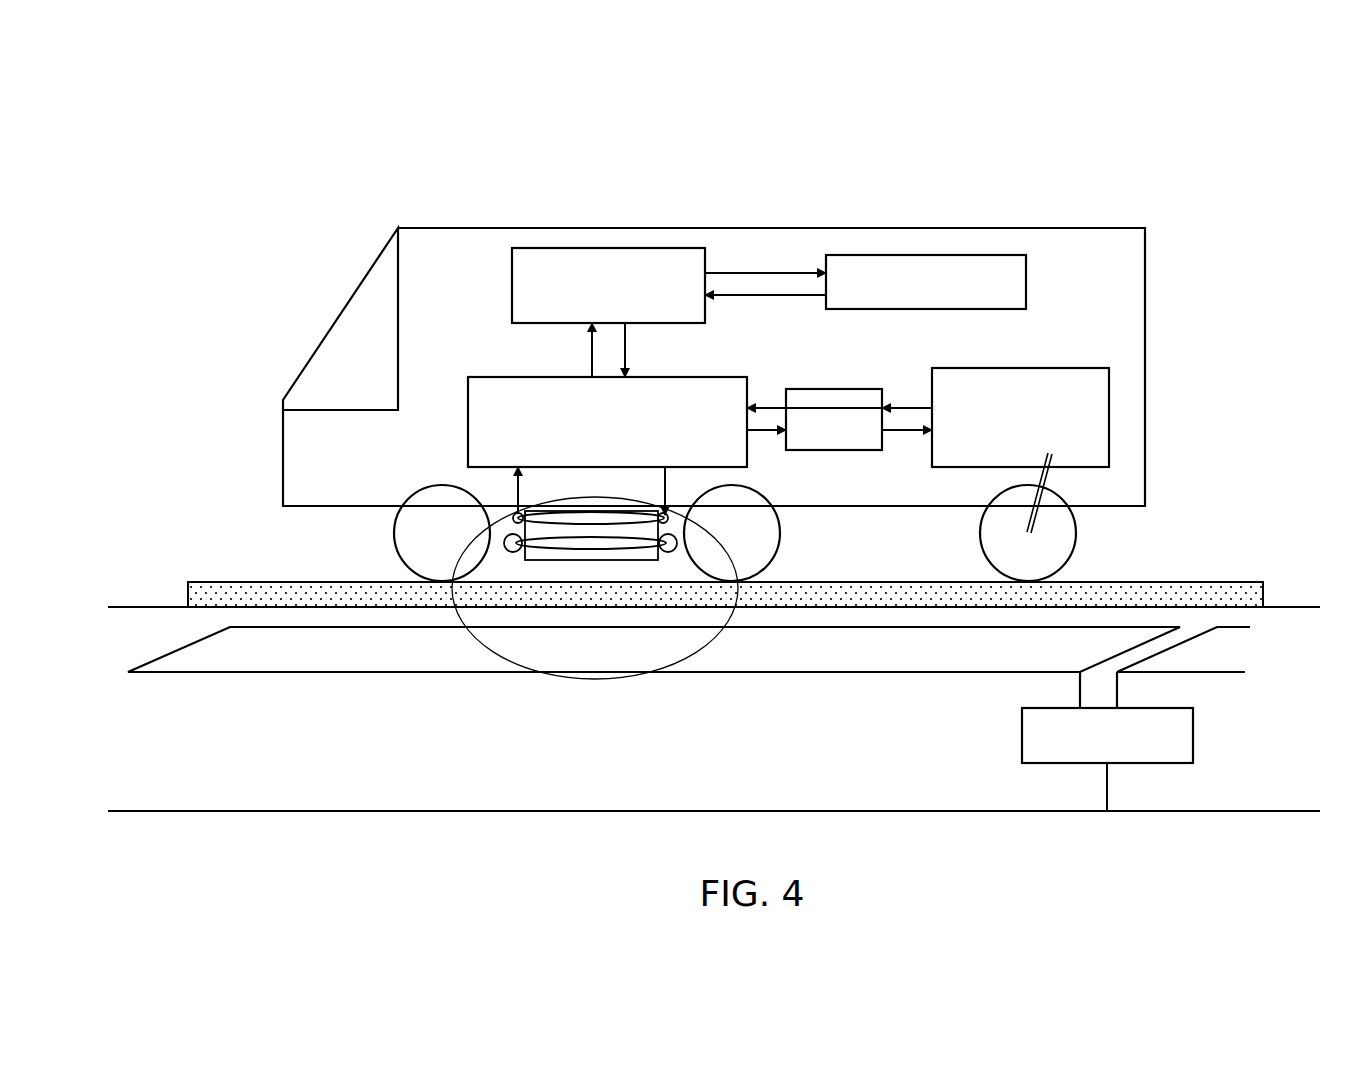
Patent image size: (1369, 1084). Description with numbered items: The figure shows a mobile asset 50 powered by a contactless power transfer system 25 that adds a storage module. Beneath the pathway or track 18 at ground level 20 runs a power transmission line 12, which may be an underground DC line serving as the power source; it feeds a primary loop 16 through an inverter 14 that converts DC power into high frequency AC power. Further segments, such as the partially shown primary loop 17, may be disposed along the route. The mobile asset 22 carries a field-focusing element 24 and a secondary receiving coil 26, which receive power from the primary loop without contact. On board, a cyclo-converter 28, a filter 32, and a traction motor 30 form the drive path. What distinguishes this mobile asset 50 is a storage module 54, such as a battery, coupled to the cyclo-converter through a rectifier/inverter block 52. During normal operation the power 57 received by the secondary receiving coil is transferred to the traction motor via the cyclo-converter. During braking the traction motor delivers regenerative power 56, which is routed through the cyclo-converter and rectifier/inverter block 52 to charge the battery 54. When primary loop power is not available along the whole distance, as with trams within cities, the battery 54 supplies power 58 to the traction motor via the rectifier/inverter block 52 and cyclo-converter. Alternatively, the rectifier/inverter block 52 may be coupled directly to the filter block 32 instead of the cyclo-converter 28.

The power transmission line 12 is at (765, 811).
The inverter 14 is at (1022, 736).
The primary loop 16 is at (312, 673).
The primary loop 17 is at (1218, 670).
The pathway or track 18 is at (1172, 582).
The ground level 20 is at (1292, 605).
The mobile asset 22 is at (1145, 255).
The field-focusing element 24 is at (552, 540).
The contactless power transfer system 25 is at (608, 684).
The secondary receiving coil 26 is at (608, 520).
The cyclo-converter 28 is at (607, 422).
The traction motor 30 is at (1080, 368).
The filter 32 is at (834, 419).
The mobile asset 50 is at (1012, 148).
The rectifier/inverter block 52 is at (585, 248).
The storage module 54 is at (953, 255).
The regenerative power 56 is at (755, 270).
The received power 57 is at (515, 490).
The battery power 58 is at (626, 342).